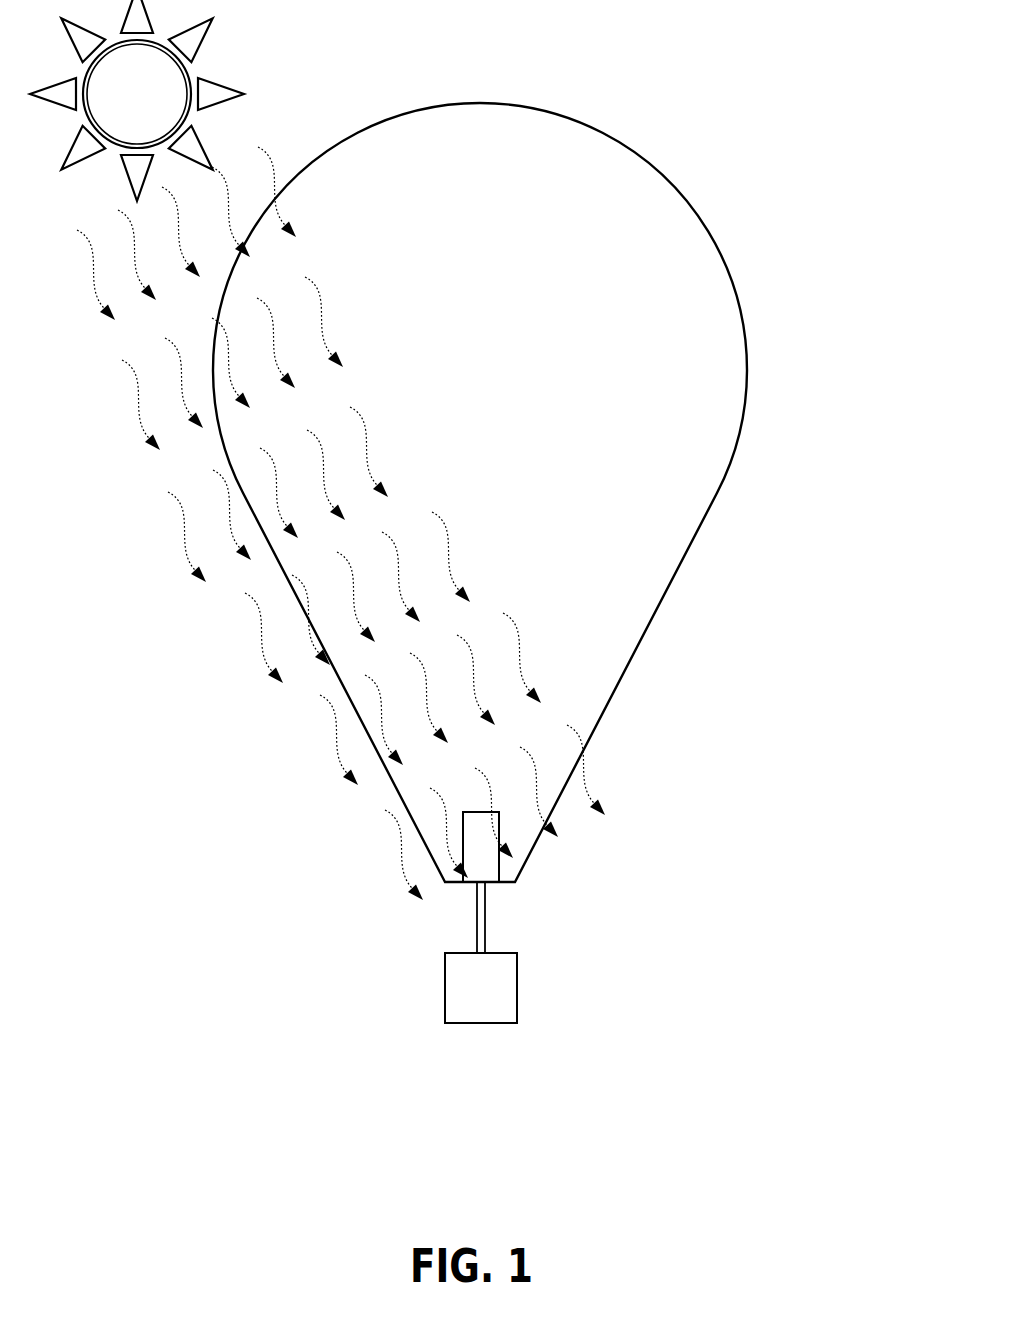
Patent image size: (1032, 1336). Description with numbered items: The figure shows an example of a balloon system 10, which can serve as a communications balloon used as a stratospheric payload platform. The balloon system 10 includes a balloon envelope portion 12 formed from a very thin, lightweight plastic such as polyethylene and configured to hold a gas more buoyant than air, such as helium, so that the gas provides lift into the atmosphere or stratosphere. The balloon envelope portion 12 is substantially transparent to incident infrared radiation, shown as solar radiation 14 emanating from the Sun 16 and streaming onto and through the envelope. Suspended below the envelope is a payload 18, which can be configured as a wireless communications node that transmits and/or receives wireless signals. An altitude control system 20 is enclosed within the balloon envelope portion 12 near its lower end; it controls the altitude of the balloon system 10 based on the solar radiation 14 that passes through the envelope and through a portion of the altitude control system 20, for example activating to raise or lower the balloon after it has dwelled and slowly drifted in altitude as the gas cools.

The balloon system 10 is at (564, 561).
The balloon envelope portion 12 is at (618, 138).
The solar radiation 14 is at (163, 575).
The Sun 16 is at (232, 43).
The payload 18 is at (447, 980).
The altitude control system 20 is at (499, 865).